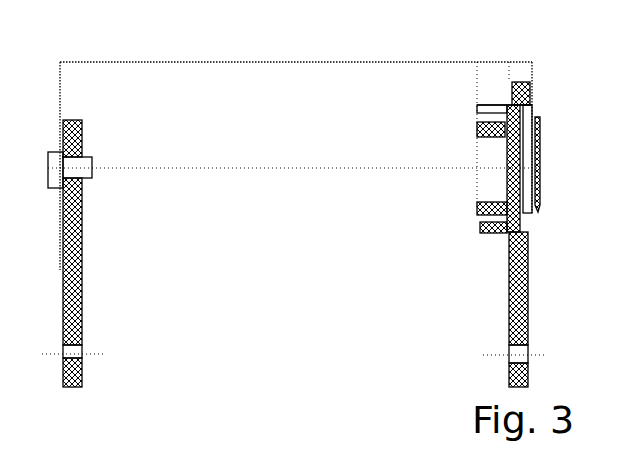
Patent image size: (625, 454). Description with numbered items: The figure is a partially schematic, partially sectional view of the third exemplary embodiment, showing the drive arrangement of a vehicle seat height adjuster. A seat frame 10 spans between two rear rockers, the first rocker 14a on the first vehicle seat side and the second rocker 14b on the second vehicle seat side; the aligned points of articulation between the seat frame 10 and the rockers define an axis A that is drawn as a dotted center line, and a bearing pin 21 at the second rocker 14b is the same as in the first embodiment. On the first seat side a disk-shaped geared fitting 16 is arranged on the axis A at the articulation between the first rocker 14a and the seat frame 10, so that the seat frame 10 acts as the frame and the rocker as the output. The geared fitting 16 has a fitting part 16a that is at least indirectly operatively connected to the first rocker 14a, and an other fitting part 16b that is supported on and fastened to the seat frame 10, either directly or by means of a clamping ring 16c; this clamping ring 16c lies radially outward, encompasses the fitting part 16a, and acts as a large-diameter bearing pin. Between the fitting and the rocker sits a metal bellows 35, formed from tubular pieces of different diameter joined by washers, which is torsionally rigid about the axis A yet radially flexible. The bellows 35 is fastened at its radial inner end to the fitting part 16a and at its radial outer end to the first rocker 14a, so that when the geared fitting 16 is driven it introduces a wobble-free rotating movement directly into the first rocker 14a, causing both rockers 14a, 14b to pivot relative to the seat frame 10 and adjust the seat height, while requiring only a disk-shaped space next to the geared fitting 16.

The seat frame 10 is at (288, 60).
The axis A is at (403, 169).
The first rocker 14a is at (513, 335).
The second rocker 14b is at (80, 305).
The bearing pin 21 is at (62, 157).
The geared fitting 16 is at (470, 180).
The fitting part 16a is at (512, 200).
The other fitting part 16b is at (532, 138).
The clamping ring 16c is at (514, 112).
The metal bellows 35 is at (485, 212).